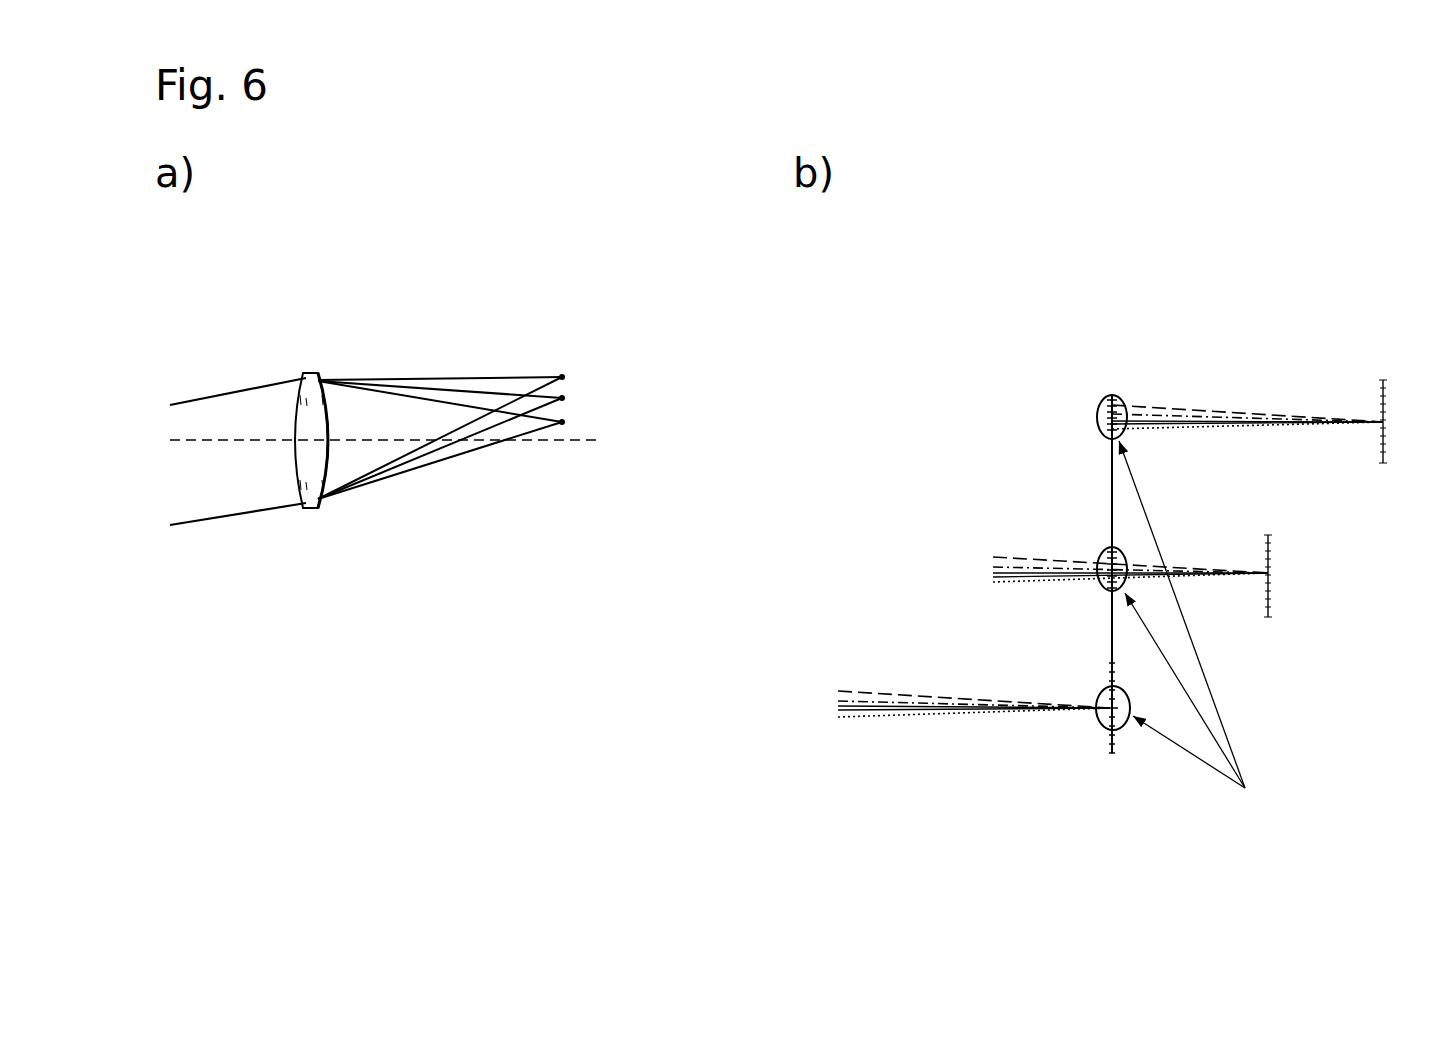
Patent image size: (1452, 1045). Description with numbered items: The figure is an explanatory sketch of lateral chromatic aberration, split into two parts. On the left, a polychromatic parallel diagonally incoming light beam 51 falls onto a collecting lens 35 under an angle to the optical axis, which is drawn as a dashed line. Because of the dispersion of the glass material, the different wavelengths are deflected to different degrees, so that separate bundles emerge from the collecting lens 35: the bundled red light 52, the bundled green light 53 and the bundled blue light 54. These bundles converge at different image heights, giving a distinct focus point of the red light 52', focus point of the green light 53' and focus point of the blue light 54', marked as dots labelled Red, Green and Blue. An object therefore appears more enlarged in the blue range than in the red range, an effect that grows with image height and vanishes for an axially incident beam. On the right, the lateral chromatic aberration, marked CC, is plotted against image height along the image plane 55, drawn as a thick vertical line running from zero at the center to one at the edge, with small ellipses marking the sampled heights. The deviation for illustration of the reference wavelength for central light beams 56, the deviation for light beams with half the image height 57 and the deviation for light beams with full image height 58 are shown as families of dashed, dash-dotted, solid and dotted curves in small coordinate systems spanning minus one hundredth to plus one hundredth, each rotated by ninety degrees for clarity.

The diagonally incoming light beam 51 is at (193, 520).
The collecting lens 35 is at (297, 477).
The bundled red light 52 is at (440, 467).
The bundled green light 53 is at (440, 459).
The bundled blue light 54 is at (440, 449).
The focus point of the red light 52' is at (573, 458).
The focus point of the green light 53' is at (625, 392).
The focus point of the blue light 54' is at (565, 351).
The image plane 55 is at (1112, 465).
The deviation for illustration of the reference wavelength for central light beams 56 is at (947, 727).
The deviation for illustration of the reference wavelength for light beams with half 57 is at (1008, 547).
The deviation for illustration of the reference wavelength for light beams with full 58 is at (1237, 393).